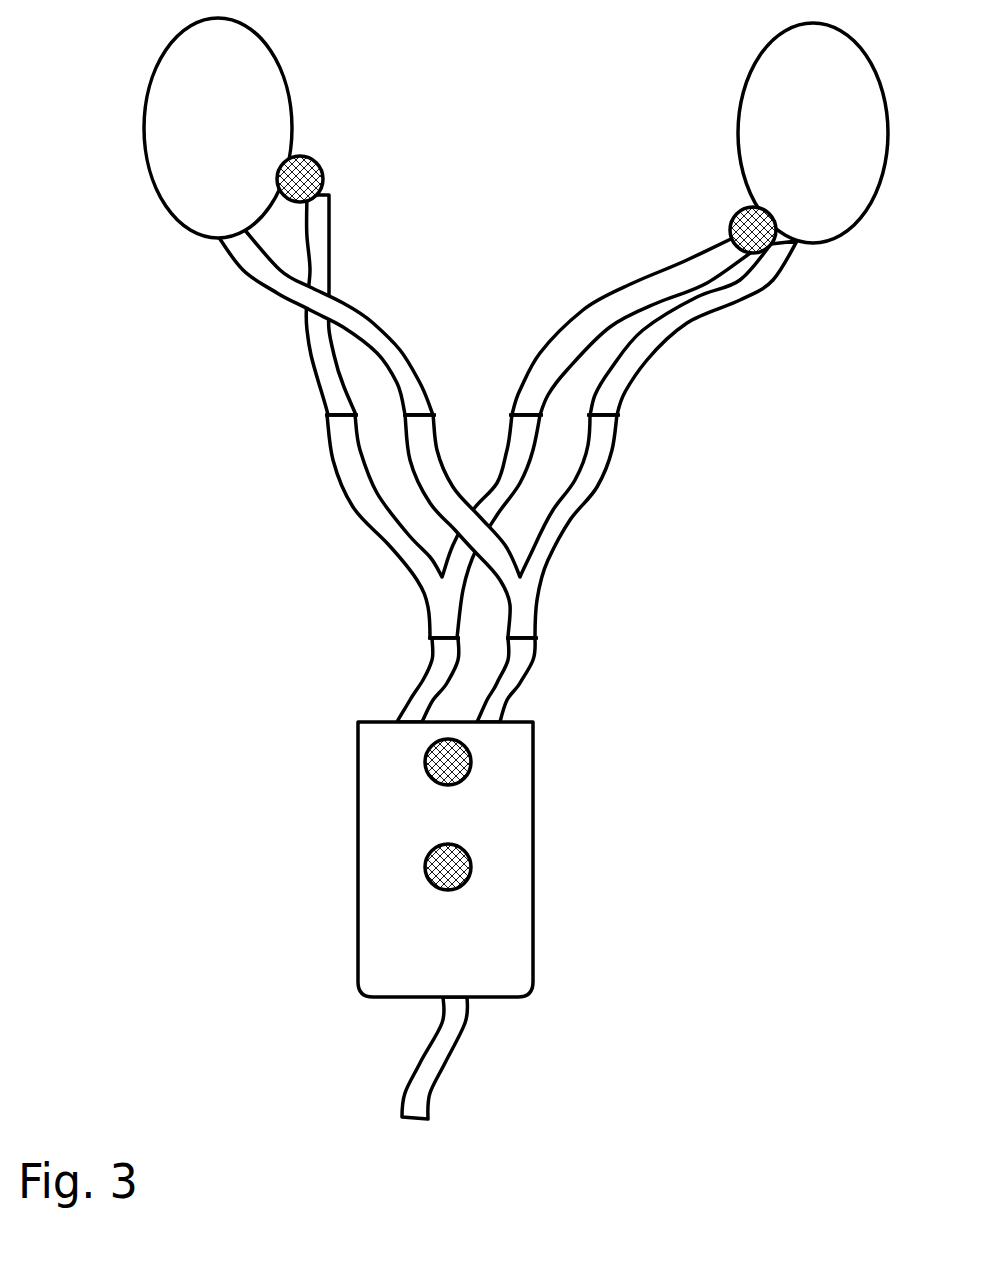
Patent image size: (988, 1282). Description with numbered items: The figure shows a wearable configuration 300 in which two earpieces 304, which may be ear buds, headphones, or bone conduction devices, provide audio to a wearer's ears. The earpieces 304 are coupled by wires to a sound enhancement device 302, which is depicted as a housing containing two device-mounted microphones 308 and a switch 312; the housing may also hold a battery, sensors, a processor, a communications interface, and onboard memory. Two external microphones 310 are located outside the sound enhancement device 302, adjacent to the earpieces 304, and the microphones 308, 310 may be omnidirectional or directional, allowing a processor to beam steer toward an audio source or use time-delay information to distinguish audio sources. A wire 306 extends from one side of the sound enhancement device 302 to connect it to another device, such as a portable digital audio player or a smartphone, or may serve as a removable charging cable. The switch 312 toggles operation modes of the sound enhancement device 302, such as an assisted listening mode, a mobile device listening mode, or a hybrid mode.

The wearable configuration 300 is at (506, 568).
The sound enhancement device 302 is at (535, 893).
The earpieces 304 is at (168, 215).
The wire 306 is at (457, 1052).
The device-mounted microphones 308 is at (422, 765).
The external microphones 310 is at (323, 178).
The switch 312 is at (422, 867).